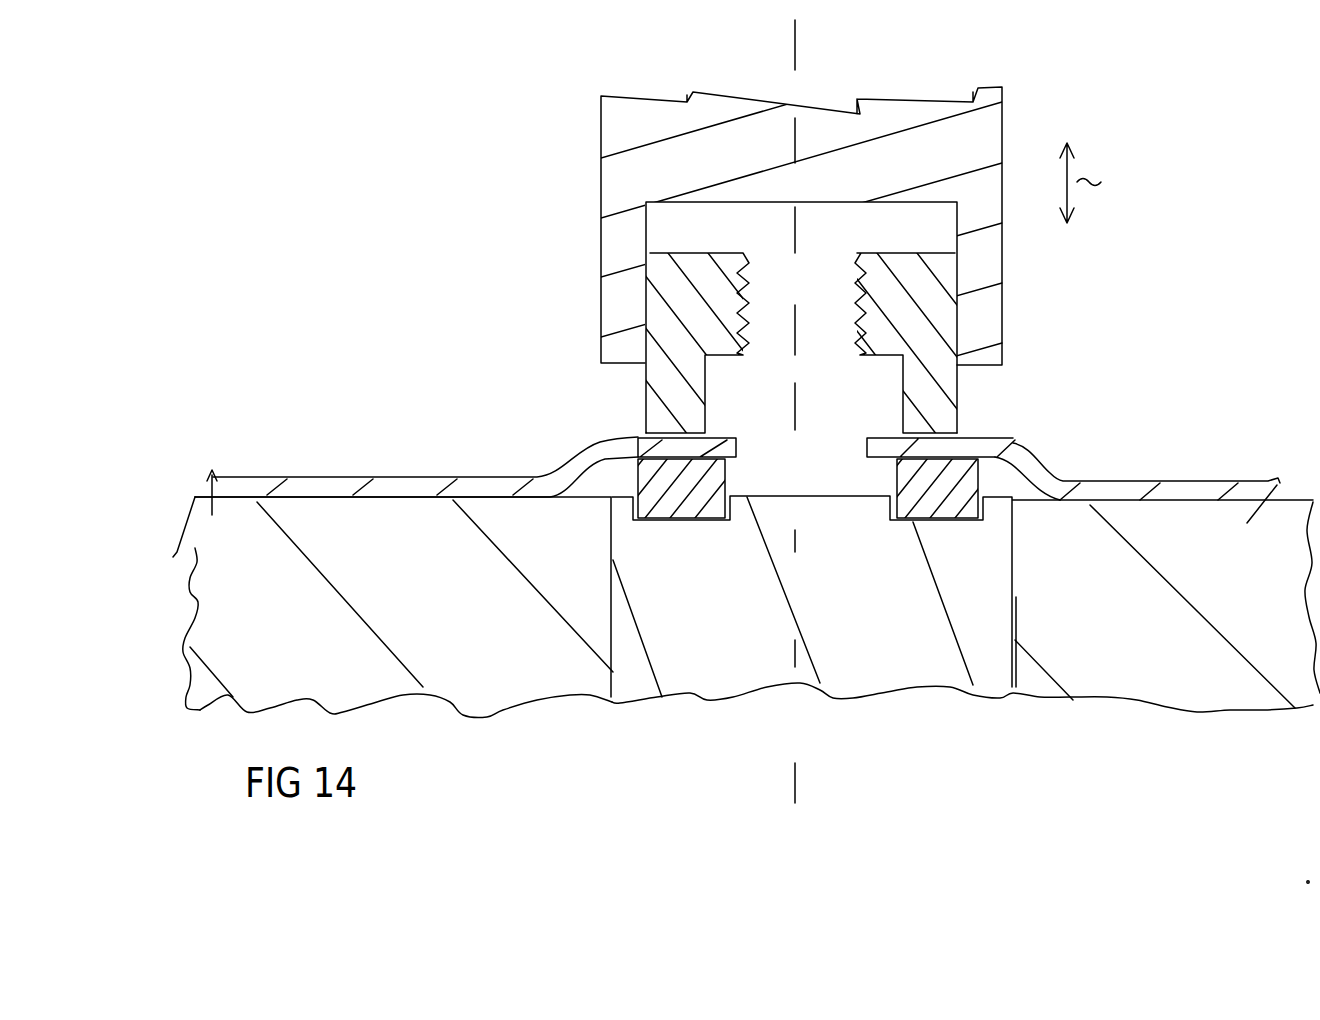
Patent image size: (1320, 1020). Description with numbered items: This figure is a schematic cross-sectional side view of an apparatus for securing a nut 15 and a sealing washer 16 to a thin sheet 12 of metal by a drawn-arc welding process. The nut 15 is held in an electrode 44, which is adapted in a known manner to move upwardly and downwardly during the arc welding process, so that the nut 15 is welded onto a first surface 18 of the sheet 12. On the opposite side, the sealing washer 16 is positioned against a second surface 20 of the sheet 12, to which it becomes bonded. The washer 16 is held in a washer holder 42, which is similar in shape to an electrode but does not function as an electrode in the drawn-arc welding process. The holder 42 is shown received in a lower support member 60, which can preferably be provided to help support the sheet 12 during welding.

The thin sheet 12 is at (1193, 418).
The nut 15 is at (950, 378).
The sealing washer 16 is at (730, 481).
The first surface 18 is at (987, 433).
The second surface 20 is at (882, 457).
The washer holder 42 is at (877, 673).
The electrode 44 is at (612, 175).
The lower support member 60 is at (493, 682).